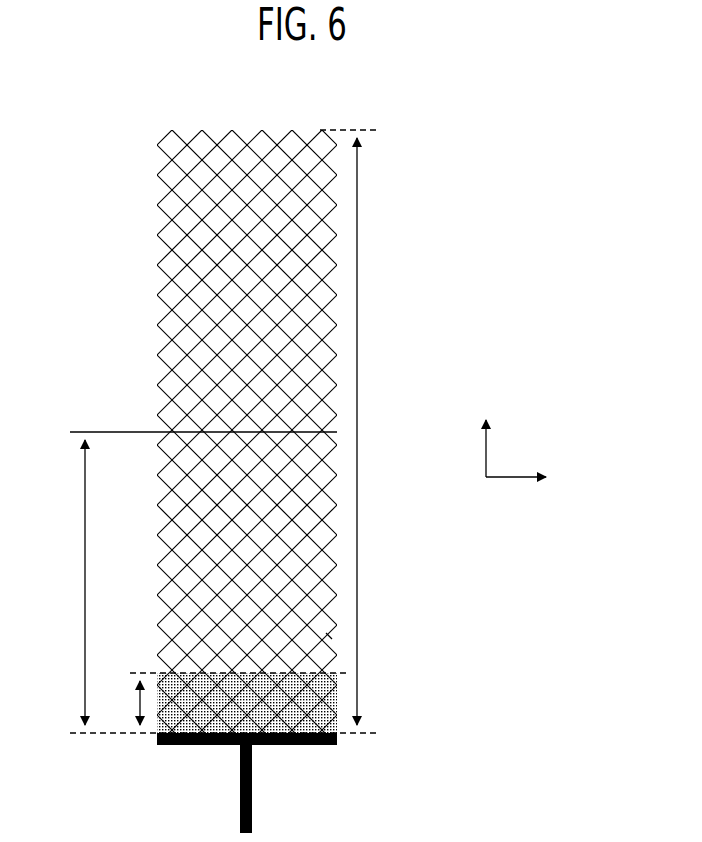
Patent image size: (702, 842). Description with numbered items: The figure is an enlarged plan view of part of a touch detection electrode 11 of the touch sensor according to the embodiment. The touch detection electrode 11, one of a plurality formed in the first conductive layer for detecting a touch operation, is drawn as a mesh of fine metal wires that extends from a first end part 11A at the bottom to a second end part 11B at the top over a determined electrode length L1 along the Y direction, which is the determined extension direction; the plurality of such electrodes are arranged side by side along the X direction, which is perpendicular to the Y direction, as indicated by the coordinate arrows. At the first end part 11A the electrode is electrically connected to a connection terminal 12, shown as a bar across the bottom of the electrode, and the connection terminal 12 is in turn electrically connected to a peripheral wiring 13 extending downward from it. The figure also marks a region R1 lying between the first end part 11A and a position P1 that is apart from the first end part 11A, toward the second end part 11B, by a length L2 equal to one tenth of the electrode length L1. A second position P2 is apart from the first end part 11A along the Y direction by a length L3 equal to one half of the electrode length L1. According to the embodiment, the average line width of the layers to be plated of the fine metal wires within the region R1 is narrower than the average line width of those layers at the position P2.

The touch detection electrode 11 is at (160, 222).
The first end part 11A is at (330, 673).
The second end part 11B is at (222, 128).
The connection terminal 12 is at (188, 745).
The peripheral wiring 13 is at (252, 803).
The region R1 is at (320, 703).
The position P1 is at (328, 636).
The position P2 is at (140, 430).
The electrode length L1 is at (376, 431).
The length L2 is at (120, 703).
The length L3 is at (67, 582).
The X direction X is at (533, 478).
The Y direction Y is at (487, 425).